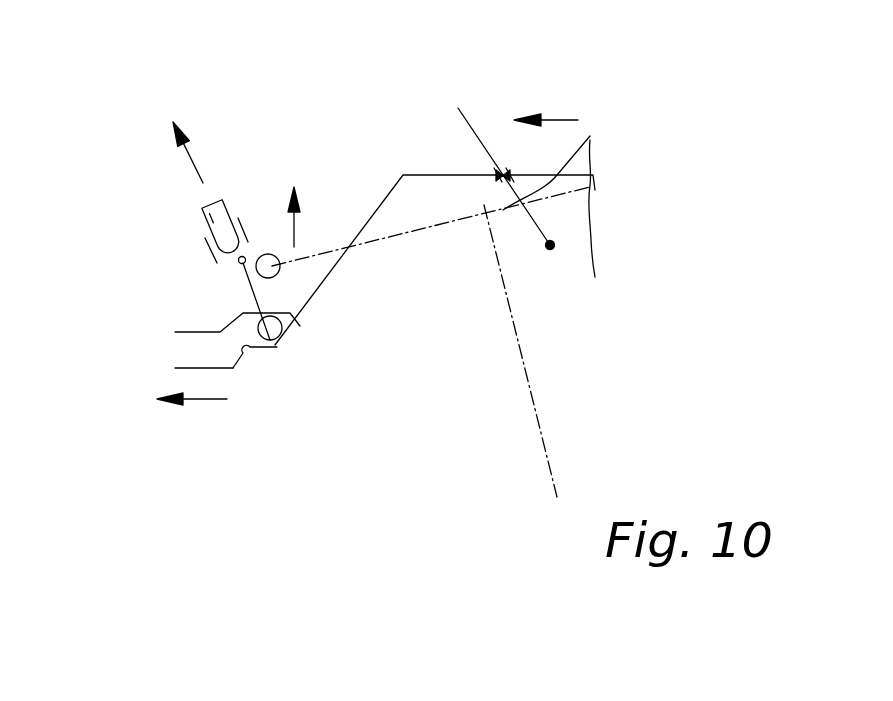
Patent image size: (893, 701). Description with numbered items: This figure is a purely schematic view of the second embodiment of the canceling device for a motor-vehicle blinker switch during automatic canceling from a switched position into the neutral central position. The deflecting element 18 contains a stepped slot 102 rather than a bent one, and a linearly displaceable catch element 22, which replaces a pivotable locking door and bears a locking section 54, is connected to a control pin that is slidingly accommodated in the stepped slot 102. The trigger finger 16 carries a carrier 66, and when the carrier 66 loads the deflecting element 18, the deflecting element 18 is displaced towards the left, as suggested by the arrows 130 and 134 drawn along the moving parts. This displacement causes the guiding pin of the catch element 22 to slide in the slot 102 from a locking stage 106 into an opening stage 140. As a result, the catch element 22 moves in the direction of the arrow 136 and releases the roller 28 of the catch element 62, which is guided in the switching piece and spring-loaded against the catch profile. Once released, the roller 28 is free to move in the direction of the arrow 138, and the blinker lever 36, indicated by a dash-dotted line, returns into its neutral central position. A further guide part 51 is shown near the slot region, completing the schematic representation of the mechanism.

The trigger finger 16 is at (590, 136).
The deflecting element 18 is at (428, 174).
The catch element 22 is at (212, 227).
The roller 28 is at (263, 254).
The blinker lever 36 is at (539, 429).
The guide element 51 is at (272, 343).
The locking section 54 is at (241, 268).
The catch element 62 is at (422, 222).
The carrier 66 is at (472, 128).
The stepped slot 102 is at (242, 363).
The locking stage 106 is at (188, 366).
The direction of movement arrow 130 is at (549, 118).
The direction of movement arrow 134 is at (202, 402).
The arrow 136 is at (198, 177).
The arrow 138 is at (297, 234).
The opening stage 140 is at (298, 325).